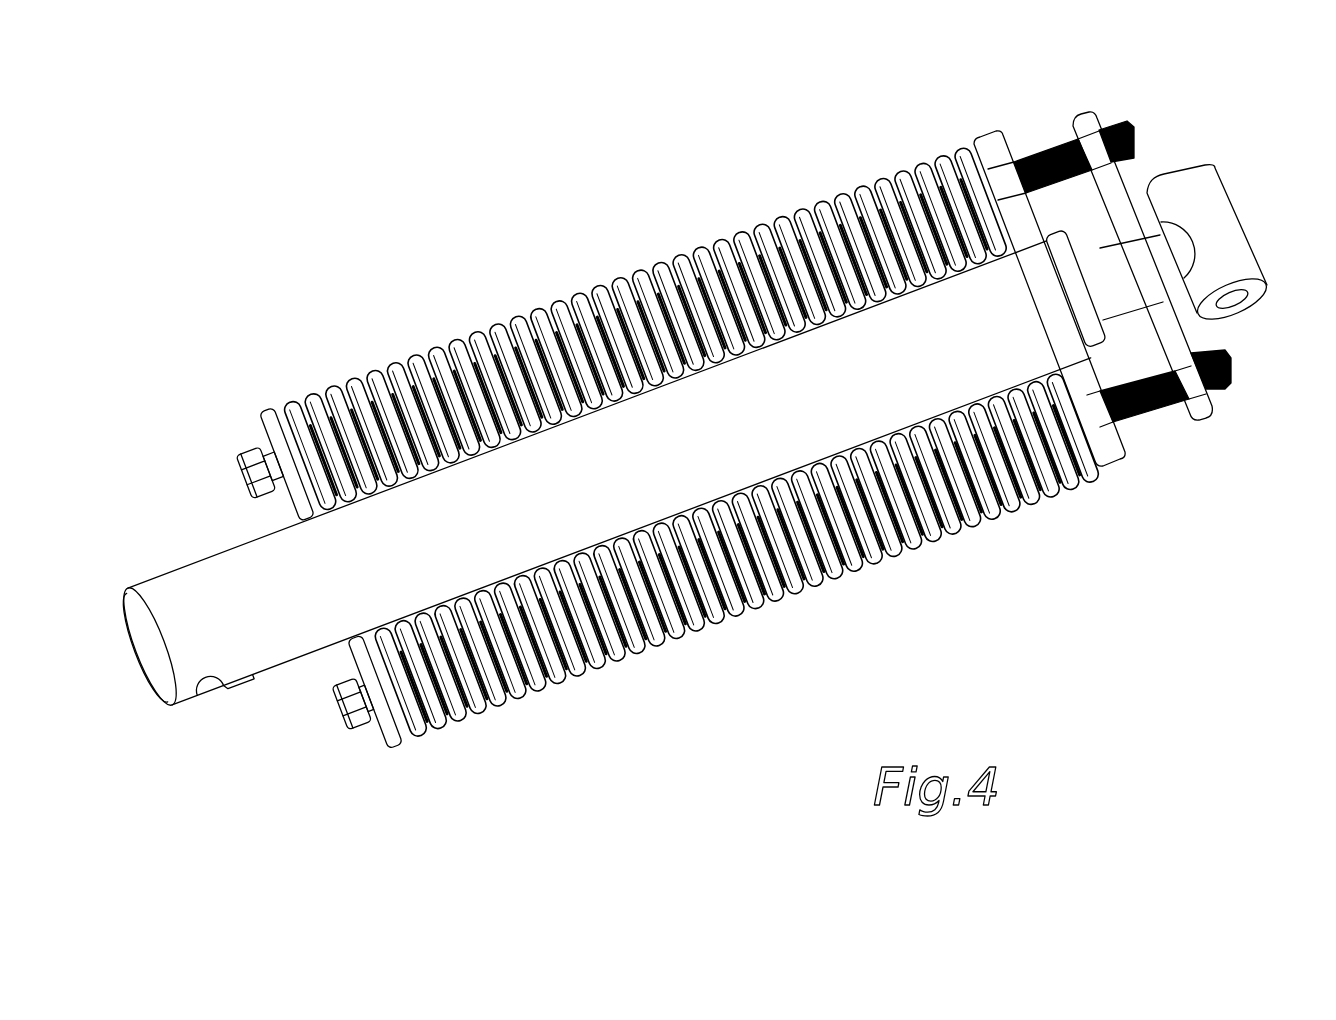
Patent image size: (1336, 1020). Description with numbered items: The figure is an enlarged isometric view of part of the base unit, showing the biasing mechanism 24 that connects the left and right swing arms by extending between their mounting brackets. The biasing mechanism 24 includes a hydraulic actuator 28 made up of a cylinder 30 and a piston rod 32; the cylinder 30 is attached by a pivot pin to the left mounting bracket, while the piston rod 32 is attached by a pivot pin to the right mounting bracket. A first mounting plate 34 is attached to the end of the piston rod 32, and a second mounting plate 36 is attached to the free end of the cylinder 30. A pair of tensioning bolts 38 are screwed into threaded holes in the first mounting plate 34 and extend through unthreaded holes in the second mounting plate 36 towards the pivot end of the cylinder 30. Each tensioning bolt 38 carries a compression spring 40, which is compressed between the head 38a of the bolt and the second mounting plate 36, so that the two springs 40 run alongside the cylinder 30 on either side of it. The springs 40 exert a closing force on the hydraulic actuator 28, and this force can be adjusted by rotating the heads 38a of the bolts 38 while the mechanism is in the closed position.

The biasing mechanism 24 is at (488, 208).
The hydraulic actuator 28 is at (625, 490).
The cylinder 30 is at (176, 585).
The piston rod 32 is at (1115, 263).
The first mounting plate 34 is at (1193, 336).
The second mounting plate 36 is at (990, 133).
The tensioning bolts 38 is at (1040, 140).
The head 38a is at (237, 472).
The compression spring 40 is at (740, 238).